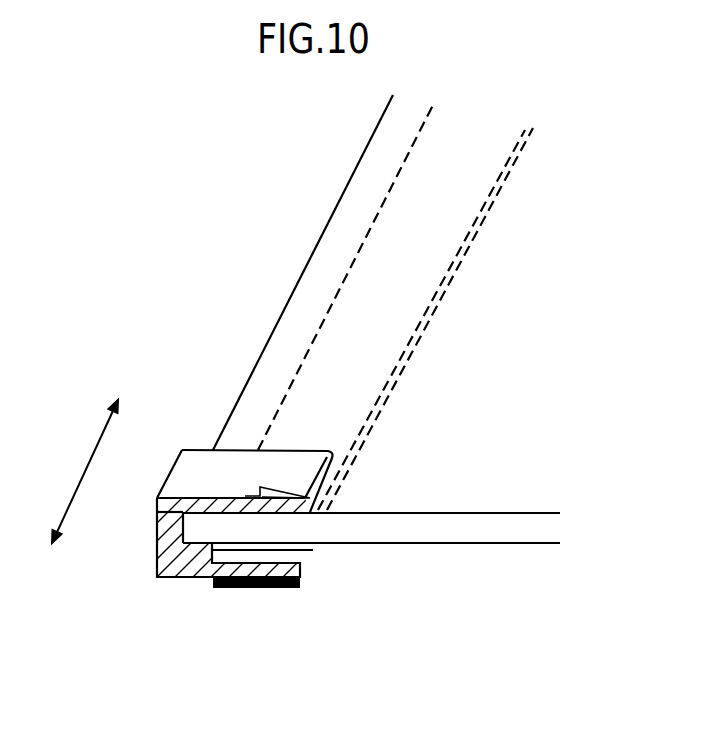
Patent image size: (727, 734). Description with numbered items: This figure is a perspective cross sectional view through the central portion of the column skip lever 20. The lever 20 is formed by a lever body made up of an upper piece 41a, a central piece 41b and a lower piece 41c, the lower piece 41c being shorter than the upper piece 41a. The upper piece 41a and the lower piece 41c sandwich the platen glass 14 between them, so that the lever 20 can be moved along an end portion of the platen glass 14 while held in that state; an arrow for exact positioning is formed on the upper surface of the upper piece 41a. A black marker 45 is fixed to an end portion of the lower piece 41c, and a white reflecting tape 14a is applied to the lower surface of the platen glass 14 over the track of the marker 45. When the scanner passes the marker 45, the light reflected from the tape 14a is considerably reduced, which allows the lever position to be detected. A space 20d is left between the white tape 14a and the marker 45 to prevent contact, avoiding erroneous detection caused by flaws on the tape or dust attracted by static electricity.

The column skip lever 20 is at (205, 458).
The upper piece 41a is at (182, 461).
The central piece 41b is at (157, 549).
The lower piece 41c is at (178, 578).
The space 20d is at (203, 578).
The black marker 45 is at (288, 588).
The platen glass 14 is at (453, 537).
The white reflecting tape 14a is at (323, 543).